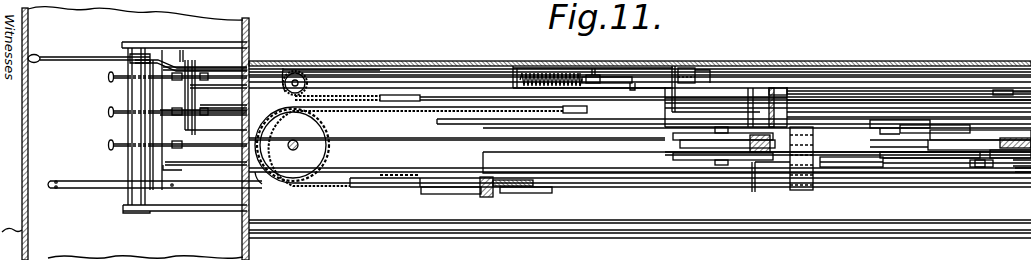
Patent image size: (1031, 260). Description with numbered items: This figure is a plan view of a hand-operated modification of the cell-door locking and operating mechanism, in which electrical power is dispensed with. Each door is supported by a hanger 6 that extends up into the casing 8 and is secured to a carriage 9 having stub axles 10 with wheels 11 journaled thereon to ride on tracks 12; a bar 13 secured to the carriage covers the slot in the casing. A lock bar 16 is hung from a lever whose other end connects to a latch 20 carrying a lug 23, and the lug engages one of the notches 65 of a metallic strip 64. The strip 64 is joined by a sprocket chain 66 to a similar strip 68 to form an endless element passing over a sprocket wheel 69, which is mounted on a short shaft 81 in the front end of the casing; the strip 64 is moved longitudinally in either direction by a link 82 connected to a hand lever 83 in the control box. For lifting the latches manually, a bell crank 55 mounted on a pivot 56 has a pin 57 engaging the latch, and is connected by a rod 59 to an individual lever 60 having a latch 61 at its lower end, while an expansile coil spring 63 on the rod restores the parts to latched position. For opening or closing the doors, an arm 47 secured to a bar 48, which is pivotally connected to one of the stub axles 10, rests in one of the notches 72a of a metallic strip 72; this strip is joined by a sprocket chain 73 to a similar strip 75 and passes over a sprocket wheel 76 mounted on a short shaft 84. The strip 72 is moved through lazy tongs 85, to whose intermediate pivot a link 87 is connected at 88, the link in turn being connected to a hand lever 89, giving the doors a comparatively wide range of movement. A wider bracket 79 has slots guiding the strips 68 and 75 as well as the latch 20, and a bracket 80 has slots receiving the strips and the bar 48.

The hanger 6 is at (856, 167).
The casing 8 is at (452, 62).
The carriage 9 is at (906, 158).
The stub axles 10 is at (980, 166).
The wheels 11 is at (1003, 143).
The tracks 12 is at (1022, 174).
The bar 13 is at (540, 143).
The lock bar 16 is at (1003, 89).
The latch 20 is at (883, 89).
The lug 23 is at (687, 70).
The arm 47 is at (803, 191).
The bar 48 is at (471, 126).
The bell crank 55 is at (613, 79).
The pivot 56 is at (592, 70).
The pin 57 is at (636, 84).
The rod 59 is at (207, 114).
The lever 60 is at (205, 128).
The latch 61 is at (107, 142).
The expansile coil spring 63 is at (536, 75).
The metallic strip 64 is at (802, 73).
The notches 65 is at (702, 68).
The sprocket chain 66 is at (346, 90).
The strip 68 is at (836, 100).
The sprocket wheel 69 is at (303, 88).
The metallic strip 72 is at (655, 186).
The notches 72a is at (788, 182).
The sprocket chain 73 is at (412, 113).
The strip 75 is at (913, 108).
The sprocket wheel 76 is at (325, 136).
The bracket 79 is at (668, 92).
The bracket 80 is at (772, 90).
The short shaft 81 is at (296, 82).
The link 82 is at (246, 62).
The hand lever 83 is at (82, 50).
The short shaft 84 is at (297, 147).
The lazy tongs 85 is at (512, 194).
The link 87 is at (262, 184).
The connection 88 is at (484, 196).
The hand lever 89 is at (92, 190).